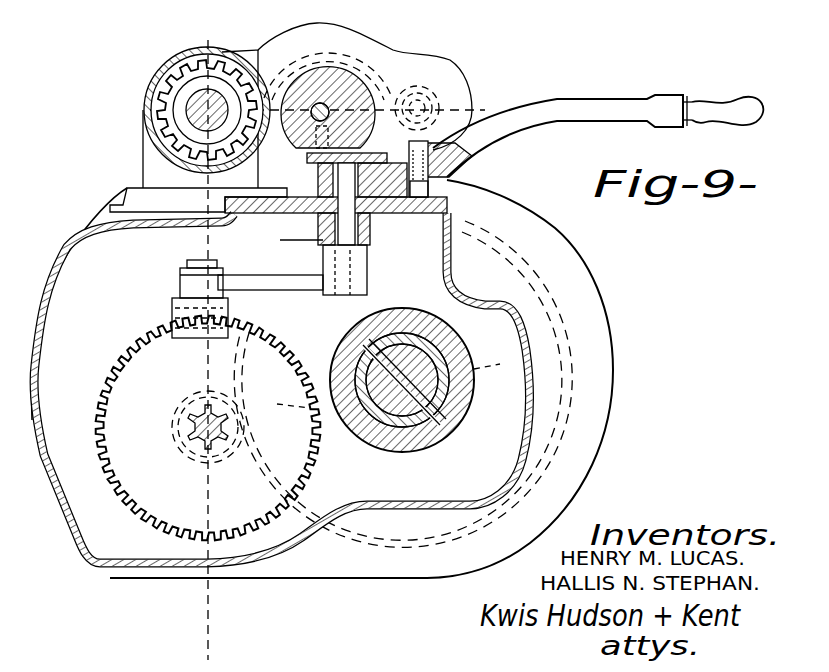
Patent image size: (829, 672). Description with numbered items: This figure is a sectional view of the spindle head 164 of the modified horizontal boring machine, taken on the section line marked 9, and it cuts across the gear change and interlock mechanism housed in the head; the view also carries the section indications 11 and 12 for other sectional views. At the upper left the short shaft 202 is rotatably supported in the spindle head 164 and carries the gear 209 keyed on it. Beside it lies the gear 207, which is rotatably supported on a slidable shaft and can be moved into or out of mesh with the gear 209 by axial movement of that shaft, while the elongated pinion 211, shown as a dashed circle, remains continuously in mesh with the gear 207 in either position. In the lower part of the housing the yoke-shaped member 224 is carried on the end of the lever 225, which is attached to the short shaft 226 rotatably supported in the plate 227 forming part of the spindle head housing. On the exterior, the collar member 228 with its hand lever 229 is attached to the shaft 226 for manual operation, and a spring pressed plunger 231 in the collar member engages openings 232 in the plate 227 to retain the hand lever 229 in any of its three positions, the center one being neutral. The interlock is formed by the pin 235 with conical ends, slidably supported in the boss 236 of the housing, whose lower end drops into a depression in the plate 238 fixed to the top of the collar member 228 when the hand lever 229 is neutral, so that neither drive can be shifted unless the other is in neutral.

The spindle head 164 is at (611, 362).
The short shaft 202 is at (213, 93).
The gear 207 is at (345, 60).
The gear 209 is at (180, 78).
The elongated pinion 211 is at (427, 90).
The yoke-shaped member 224 is at (174, 300).
The lever 225 is at (267, 278).
The short shaft 226 is at (366, 250).
The plate 227 is at (452, 205).
The collar member 228 is at (360, 214).
The hand lever 229 is at (597, 103).
The spring pressed plunger 231 is at (450, 172).
The openings 232 is at (443, 193).
The pin 235 is at (335, 117).
The boss 236 is at (327, 96).
The plate 238 is at (312, 160).
The section line 11- 11 is at (485, 118).
The section line 12- 12 is at (286, 398).
The view arrow 9 is at (393, 3).